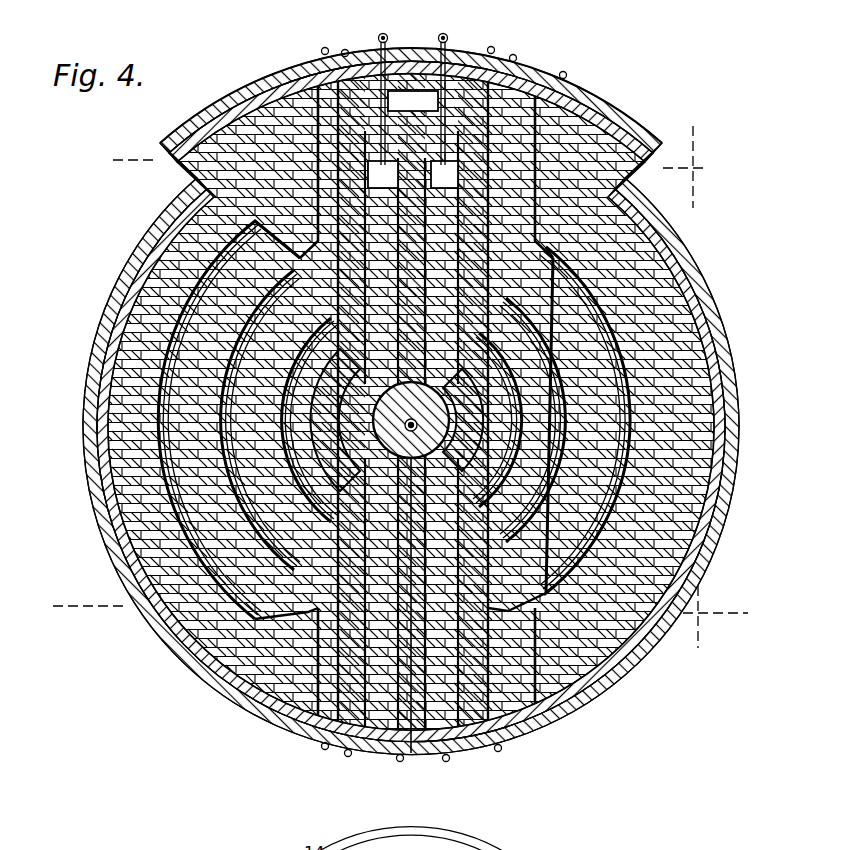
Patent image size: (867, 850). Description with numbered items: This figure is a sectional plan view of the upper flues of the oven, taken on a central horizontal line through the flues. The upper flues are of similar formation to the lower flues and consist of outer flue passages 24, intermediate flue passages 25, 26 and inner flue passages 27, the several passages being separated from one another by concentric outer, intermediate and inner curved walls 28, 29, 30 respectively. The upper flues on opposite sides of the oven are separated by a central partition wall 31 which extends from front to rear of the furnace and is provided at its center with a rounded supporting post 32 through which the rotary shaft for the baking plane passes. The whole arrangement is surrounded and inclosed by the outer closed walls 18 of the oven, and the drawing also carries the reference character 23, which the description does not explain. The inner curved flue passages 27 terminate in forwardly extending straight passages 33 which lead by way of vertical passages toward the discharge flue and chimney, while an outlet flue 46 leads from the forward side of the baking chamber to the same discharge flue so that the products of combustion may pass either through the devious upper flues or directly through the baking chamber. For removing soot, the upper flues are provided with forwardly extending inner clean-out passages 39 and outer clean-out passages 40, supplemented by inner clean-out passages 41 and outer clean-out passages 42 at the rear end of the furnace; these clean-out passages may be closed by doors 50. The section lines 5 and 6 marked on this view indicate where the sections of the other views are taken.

The section line 5— 5 is at (404, 167).
The section line 6— 6 is at (396, 617).
The outer closed walls 18 is at (705, 310).
The roof arch 23 is at (250, 90).
The outer flue passages 24 is at (180, 392).
The intermediate flue passage 25 is at (150, 354).
The intermediate flue passage 26 is at (135, 332).
The inner flue passages 27 is at (396, 420).
The outer curved wall 28 is at (110, 540).
The intermediate curved wall 29 is at (140, 500).
The inner curved wall 30 is at (120, 470).
The central partition wall 31 is at (410, 730).
The supporting post 32 is at (640, 262).
The forwardly extending straight passages 33 is at (413, 207).
The inner clean-out passages 39 is at (312, 58).
The outer clean-out passages 40 is at (276, 60).
The inner clean-out passages 41 is at (392, 732).
The outer clean-out passages 42 is at (332, 735).
The outlet flue 46 is at (404, 56).
The doors 50 is at (270, 70).